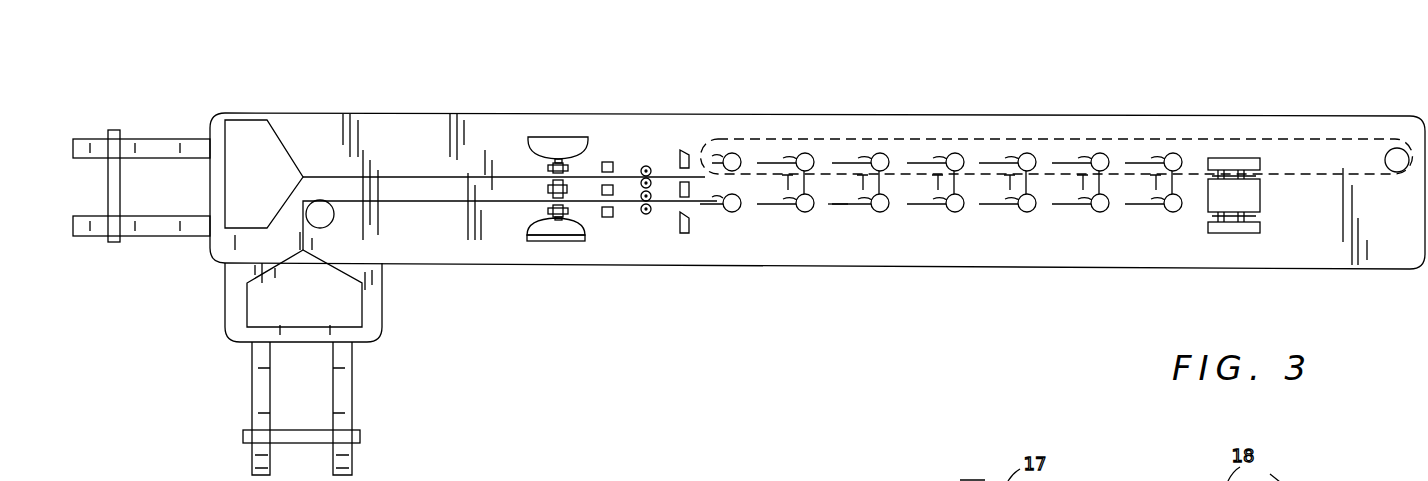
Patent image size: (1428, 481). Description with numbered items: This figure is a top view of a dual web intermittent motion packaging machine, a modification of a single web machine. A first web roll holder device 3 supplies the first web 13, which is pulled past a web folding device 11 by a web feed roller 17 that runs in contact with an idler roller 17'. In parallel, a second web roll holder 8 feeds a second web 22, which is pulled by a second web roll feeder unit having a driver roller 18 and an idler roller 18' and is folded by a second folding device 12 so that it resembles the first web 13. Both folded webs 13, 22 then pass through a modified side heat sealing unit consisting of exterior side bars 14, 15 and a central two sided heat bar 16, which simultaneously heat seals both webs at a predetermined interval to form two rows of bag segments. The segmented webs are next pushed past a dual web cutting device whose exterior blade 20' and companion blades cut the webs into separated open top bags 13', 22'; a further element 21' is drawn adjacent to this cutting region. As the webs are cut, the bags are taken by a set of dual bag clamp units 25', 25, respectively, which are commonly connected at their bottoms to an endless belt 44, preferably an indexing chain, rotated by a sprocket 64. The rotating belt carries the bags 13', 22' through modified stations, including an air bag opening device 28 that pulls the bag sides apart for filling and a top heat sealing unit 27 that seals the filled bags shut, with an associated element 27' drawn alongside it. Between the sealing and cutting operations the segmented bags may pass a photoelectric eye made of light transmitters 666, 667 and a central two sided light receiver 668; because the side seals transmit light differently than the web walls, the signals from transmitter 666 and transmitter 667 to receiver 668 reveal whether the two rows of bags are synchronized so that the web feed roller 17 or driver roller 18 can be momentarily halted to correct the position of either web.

The web roll holder device 3 is at (115, 244).
The second web roll holder 8 is at (362, 437).
The web folding device 11 is at (252, 128).
The second folding device 12 is at (350, 307).
The first web 13 is at (581, 191).
The bag 13' is at (938, 111).
The exterior side bar 14 is at (555, 137).
The exterior side bar 15 is at (540, 242).
The central two sided heat bar 16 is at (548, 186).
The web feed roller 17 is at (630, 153).
The idler roller 17' is at (637, 128).
The driver roller 18 is at (642, 261).
The idler roller 18' is at (626, 245).
The exterior blade 20' is at (685, 135).
The lower tab 21' is at (695, 261).
The second web 22 is at (510, 256).
The bag 22' is at (936, 238).
The bag clamp unit 25 is at (952, 254).
The bag clamp unit 25' is at (952, 115).
The top heat sealing unit 27 is at (1200, 257).
The upper plate 27' is at (1234, 122).
The air bag opening device 28 is at (1262, 200).
The endless belt 44 is at (1110, 140).
The sprocket 64 is at (1397, 160).
The light transmitter 666 is at (603, 160).
The light transmitter 667 is at (608, 217).
The central two sided light receiver 668 is at (600, 193).